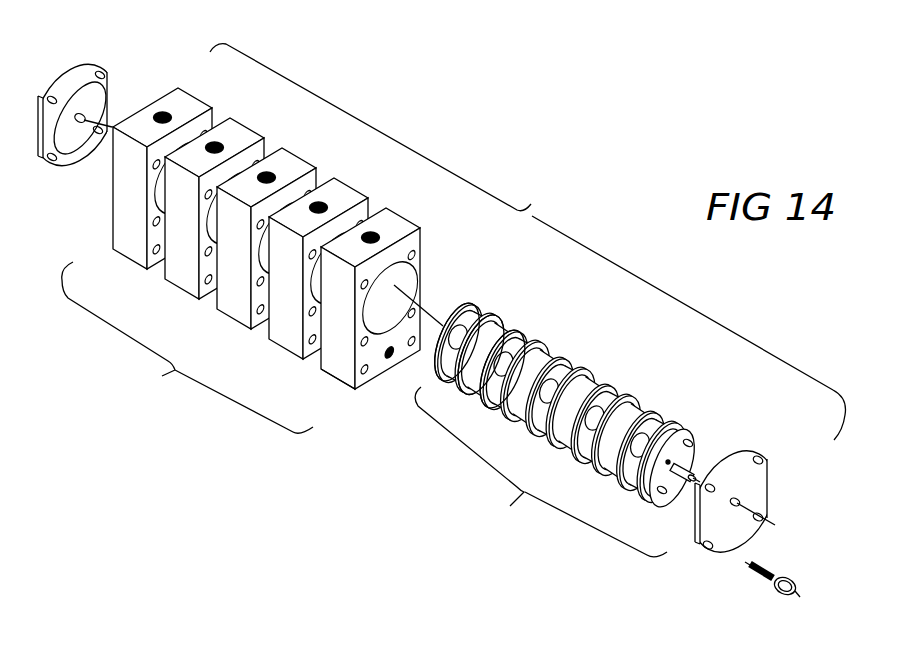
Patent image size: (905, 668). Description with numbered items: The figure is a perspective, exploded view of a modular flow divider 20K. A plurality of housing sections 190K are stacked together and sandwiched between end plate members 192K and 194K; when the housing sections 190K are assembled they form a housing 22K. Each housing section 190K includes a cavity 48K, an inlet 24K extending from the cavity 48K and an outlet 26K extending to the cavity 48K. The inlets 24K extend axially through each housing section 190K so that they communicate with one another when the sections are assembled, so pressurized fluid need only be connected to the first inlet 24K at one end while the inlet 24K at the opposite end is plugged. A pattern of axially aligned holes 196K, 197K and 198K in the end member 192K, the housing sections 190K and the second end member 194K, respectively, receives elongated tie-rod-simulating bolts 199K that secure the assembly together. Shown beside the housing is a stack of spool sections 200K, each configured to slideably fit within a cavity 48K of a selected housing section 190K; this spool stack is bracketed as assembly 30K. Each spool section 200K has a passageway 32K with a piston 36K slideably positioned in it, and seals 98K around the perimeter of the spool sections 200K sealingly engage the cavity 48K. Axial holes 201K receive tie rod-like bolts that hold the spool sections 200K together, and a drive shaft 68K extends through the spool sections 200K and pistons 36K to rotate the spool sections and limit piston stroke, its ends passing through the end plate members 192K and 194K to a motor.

The flow divider 20K is at (531, 210).
The housing 22K is at (187, 347).
The inlet 24K is at (390, 357).
The outlet 26K is at (377, 239).
The spool assembly 30K is at (541, 472).
The passageway 32K is at (467, 308).
The piston 36K is at (485, 316).
The cavity 48K is at (394, 283).
The drive shaft 68K is at (699, 478).
The seals 98K is at (531, 350).
The housing section 190K is at (342, 383).
The end plate member 192K is at (83, 168).
The end plate member 194K is at (722, 553).
The holes 196K is at (52, 158).
The holes 197K is at (356, 392).
The holes 198K is at (697, 542).
The tie-rod-simulating bolts 199K is at (767, 584).
The spool section 200K is at (456, 387).
The axial holes 201K is at (698, 441).